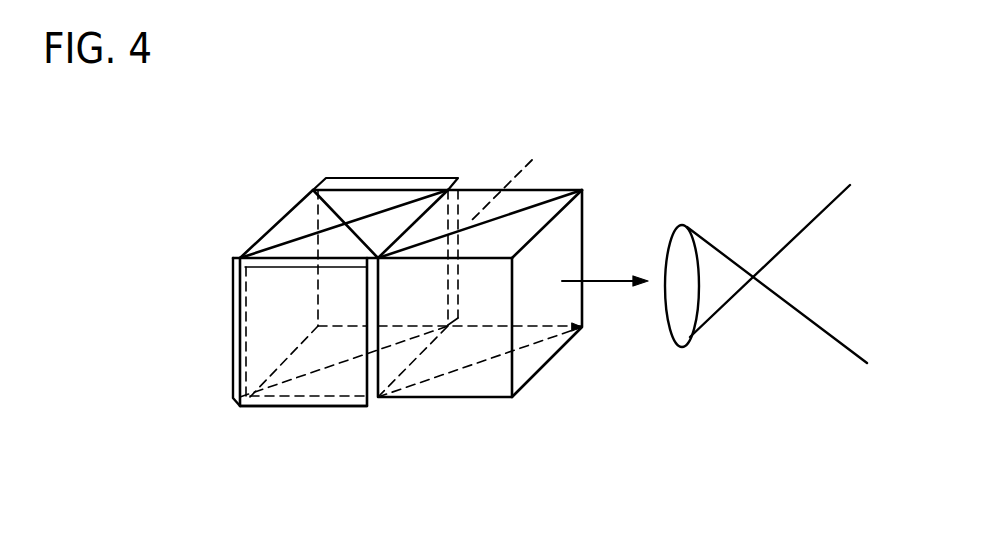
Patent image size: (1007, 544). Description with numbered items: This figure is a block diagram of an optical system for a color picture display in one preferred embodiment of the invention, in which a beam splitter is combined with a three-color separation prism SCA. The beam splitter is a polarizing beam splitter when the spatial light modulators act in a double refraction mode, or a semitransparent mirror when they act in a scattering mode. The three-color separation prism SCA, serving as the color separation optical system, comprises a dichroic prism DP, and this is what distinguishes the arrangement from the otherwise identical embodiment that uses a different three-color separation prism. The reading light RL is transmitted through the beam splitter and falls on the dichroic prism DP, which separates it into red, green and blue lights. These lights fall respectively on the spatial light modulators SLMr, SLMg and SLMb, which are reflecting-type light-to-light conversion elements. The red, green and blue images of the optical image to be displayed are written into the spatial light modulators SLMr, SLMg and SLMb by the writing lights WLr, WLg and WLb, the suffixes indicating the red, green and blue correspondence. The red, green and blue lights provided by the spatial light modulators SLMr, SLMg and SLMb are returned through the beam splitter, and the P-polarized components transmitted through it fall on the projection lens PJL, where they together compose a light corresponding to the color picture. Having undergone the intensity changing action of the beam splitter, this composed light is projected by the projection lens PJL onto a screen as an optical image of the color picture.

The spatial light modulator SLMr is at (327, 177).
The spatial light modulator SLMg is at (253, 243).
The spatial light modulator SLMb is at (278, 409).
The dichroic prism DP is at (313, 188).
The three-color separation prism SCA is at (355, 196).
The writing light WLr is at (444, 160).
The writing light WLg is at (206, 327).
The writing light WLb is at (225, 430).
The reading light RL is at (541, 151).
The projection lens PJL is at (682, 240).